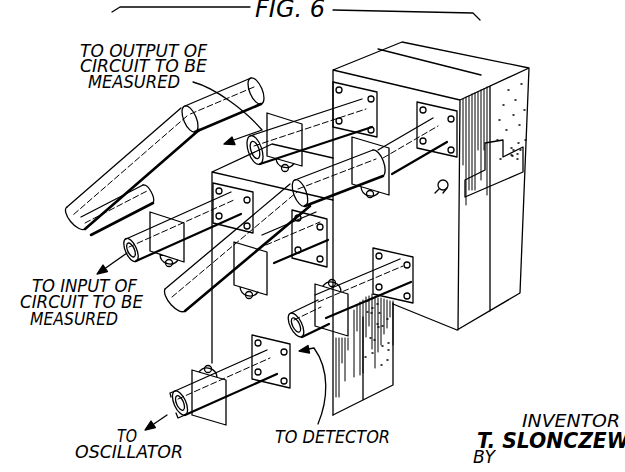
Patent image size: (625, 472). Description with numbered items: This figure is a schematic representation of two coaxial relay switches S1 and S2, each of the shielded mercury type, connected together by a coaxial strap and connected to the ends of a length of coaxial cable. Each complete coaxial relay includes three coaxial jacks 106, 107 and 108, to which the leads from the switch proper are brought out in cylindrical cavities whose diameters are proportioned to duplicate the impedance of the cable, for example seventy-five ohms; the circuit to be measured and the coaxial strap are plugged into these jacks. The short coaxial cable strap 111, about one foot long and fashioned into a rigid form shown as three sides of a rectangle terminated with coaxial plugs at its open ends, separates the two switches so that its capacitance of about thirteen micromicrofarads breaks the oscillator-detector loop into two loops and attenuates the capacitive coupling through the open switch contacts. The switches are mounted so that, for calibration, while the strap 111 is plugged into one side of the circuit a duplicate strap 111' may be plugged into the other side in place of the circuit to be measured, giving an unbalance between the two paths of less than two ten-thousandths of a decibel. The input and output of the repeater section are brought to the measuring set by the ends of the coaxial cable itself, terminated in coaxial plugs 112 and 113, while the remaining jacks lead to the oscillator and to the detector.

The coaxial jack 106 is at (288, 263).
The coaxial jack 107 is at (205, 218).
The coaxial jack 108 is at (247, 387).
The coaxial cable strap 111 is at (303, 225).
The duplicate strap 111' is at (166, 155).
The coaxial plug 112 is at (191, 387).
The coaxial plug 113 is at (292, 321).
The switch S1 is at (398, 404).
The switch S2 is at (550, 212).